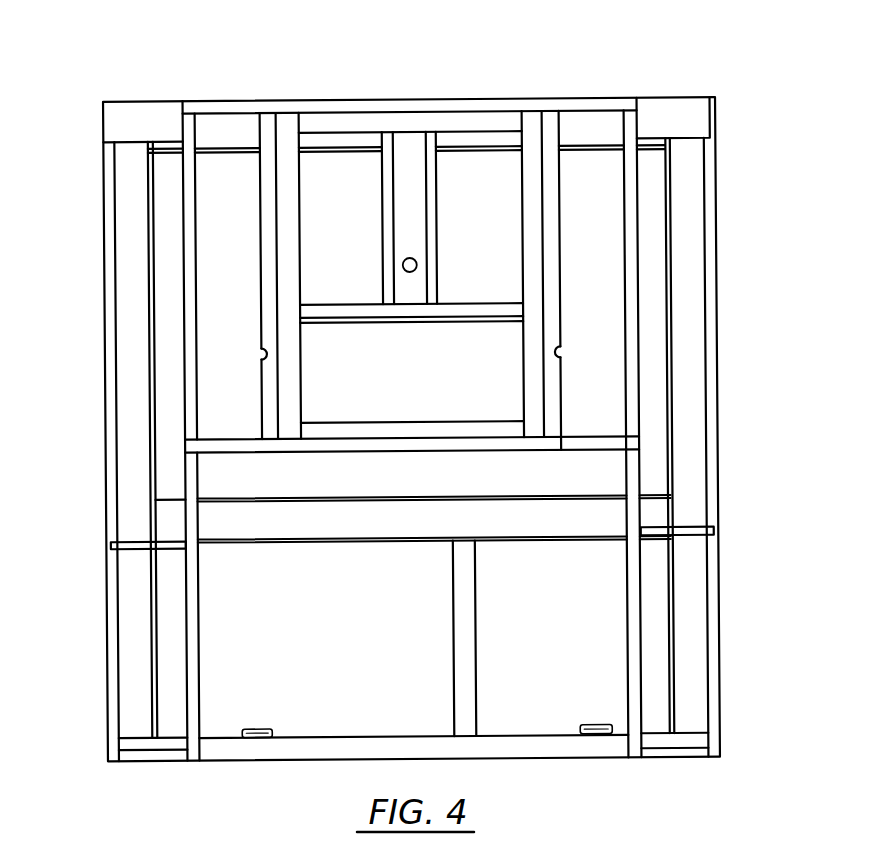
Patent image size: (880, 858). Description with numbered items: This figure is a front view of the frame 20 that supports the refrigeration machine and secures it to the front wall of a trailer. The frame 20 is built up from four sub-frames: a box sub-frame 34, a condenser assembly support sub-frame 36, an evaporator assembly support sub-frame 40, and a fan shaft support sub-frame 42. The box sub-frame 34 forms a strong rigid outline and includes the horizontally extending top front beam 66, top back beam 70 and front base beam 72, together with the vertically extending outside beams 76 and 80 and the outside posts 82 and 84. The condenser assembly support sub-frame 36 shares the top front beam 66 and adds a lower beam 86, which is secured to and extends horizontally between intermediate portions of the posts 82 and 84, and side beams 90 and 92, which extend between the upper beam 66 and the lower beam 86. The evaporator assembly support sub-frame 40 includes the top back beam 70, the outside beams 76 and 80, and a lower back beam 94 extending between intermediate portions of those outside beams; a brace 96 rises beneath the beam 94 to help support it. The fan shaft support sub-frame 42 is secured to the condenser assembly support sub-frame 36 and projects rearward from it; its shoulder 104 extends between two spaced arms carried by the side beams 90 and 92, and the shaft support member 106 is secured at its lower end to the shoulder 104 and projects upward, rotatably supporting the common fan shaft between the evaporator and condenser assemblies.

The frame 20 is at (708, 66).
The box sub-frame 34 is at (149, 77).
The condenser assembly support sub-frame 36 is at (247, 331).
The evaporator assembly support sub-frame 40 is at (734, 238).
The fan shaft support sub-frame 42 is at (371, 342).
The top front beam 66 is at (348, 101).
The top back beam 70 is at (366, 155).
The front base beam 72 is at (318, 737).
The outside beam 76 is at (125, 302).
The outside beam 80 is at (693, 422).
The outside post 82 is at (200, 626).
The outside post 84 is at (627, 595).
The lower beam 86 is at (348, 451).
The side beam 90 is at (261, 233).
The side beam 92 is at (521, 240).
The lower back beam 94 is at (434, 519).
The brace 96 is at (452, 660).
The shoulder 104 is at (457, 323).
The shaft support member 106 is at (440, 188).